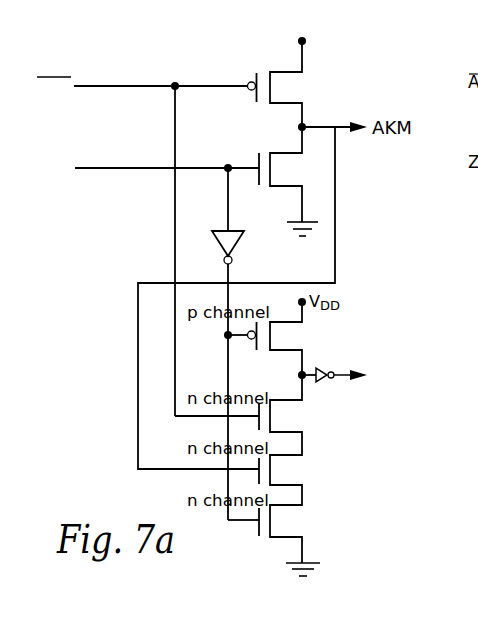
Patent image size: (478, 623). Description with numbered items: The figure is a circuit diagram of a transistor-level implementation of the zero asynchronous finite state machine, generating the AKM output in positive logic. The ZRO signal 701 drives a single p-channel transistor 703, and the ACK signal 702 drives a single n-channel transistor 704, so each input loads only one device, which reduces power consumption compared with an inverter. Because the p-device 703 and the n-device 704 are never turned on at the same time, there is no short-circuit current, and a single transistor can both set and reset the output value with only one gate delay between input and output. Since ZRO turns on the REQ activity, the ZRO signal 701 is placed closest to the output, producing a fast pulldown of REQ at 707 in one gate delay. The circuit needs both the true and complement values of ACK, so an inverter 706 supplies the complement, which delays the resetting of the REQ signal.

The ZRO signal input 701 is at (50, 71).
The ACK signal input 702 is at (56, 178).
The p-channel transistor 703 is at (299, 88).
The n-channel transistor 704 is at (297, 173).
The inverter 706 is at (235, 230).
The REQ output 707 is at (392, 387).